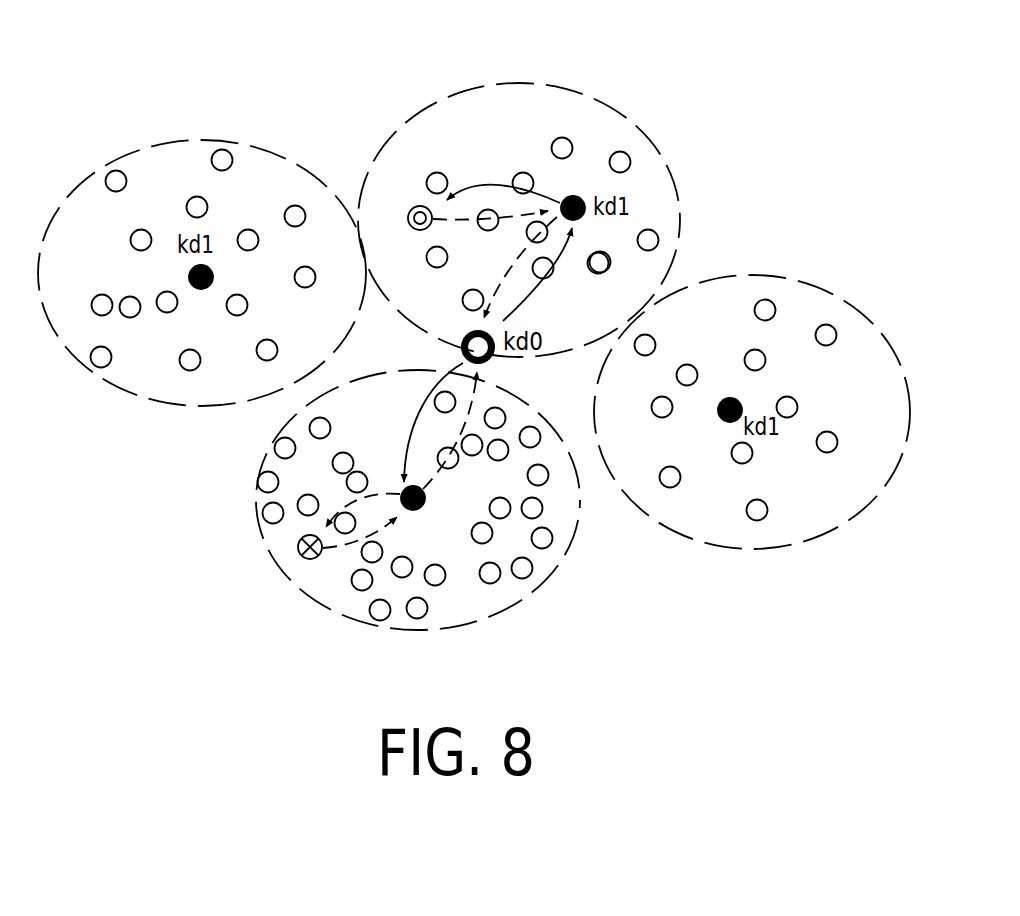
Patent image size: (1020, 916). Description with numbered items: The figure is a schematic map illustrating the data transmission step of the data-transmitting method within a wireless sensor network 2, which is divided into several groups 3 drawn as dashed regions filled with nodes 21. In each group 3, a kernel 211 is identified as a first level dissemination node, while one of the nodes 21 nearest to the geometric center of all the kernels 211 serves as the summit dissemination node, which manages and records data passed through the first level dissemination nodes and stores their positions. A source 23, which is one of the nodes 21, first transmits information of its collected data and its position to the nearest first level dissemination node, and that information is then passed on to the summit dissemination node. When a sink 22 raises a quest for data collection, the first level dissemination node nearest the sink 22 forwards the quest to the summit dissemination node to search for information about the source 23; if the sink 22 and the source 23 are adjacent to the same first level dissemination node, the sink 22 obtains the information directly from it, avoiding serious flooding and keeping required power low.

The wireless sensor network 2 is at (575, 129).
The group 3 is at (172, 142).
The node 21 is at (437, 174).
The kernel 211 is at (425, 499).
The sink 22 is at (297, 550).
The source 23 is at (414, 210).